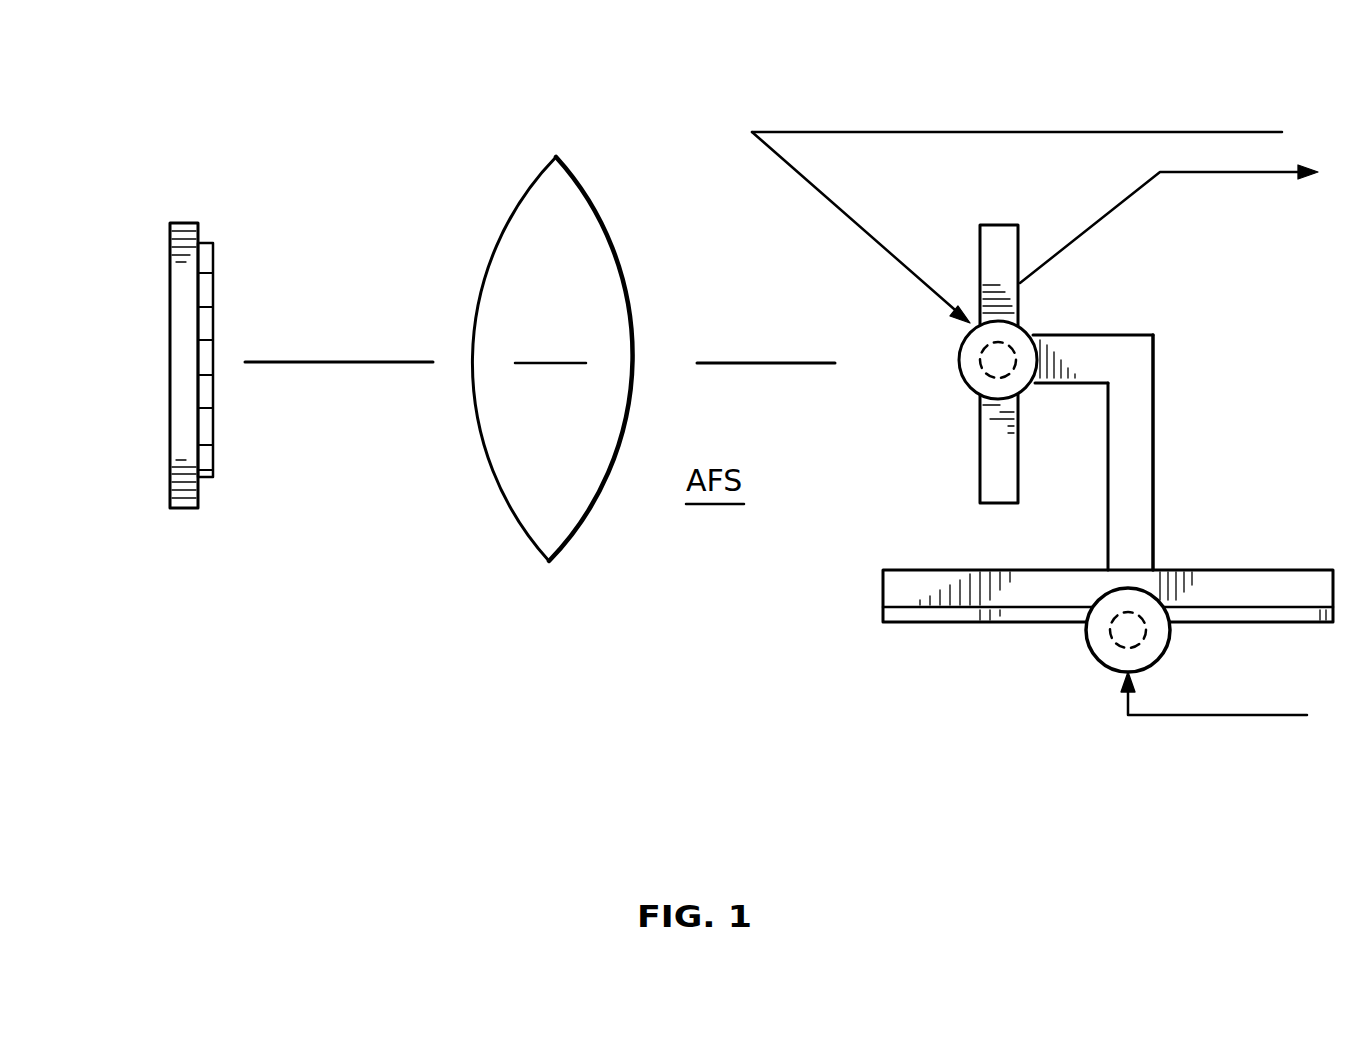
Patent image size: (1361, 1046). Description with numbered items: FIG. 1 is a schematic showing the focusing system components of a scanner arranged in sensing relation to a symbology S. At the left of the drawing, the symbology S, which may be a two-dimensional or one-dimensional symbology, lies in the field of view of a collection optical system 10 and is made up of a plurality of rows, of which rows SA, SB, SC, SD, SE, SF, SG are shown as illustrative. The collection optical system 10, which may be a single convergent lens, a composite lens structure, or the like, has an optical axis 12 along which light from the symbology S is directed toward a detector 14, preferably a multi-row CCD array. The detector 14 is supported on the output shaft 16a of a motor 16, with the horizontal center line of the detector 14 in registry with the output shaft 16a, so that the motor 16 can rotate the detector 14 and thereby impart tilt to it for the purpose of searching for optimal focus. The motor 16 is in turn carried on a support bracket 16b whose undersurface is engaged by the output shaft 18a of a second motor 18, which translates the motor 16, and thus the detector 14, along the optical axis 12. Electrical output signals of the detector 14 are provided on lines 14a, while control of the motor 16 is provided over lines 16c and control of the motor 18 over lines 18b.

The symbology S is at (180, 223).
The row SA is at (213, 253).
The row SB is at (213, 283).
The row SC is at (213, 316).
The row SD is at (213, 350).
The row SE is at (213, 388).
The row SF is at (213, 421).
The row SG is at (213, 455).
The collection optical system 10 is at (583, 181).
The optical axis 12 is at (735, 363).
The detector 14 is at (1003, 225).
The lines 14a is at (1202, 172).
The motor 16 is at (1025, 330).
The output shaft 16a is at (975, 363).
The support bracket 16b is at (1153, 388).
The lines 16c is at (1110, 130).
The motor 18 is at (1172, 643).
The output shaft 18a is at (1103, 633).
The lines 18b is at (1232, 715).